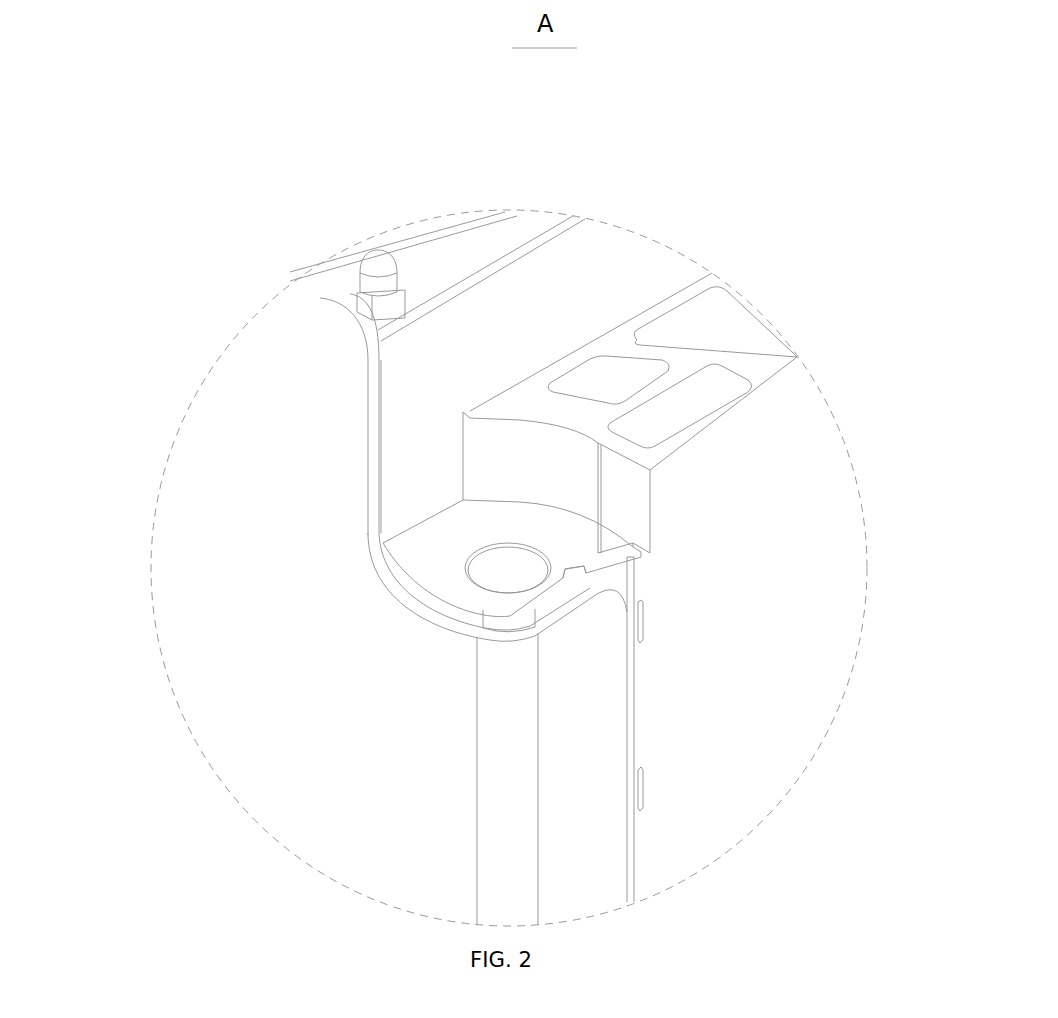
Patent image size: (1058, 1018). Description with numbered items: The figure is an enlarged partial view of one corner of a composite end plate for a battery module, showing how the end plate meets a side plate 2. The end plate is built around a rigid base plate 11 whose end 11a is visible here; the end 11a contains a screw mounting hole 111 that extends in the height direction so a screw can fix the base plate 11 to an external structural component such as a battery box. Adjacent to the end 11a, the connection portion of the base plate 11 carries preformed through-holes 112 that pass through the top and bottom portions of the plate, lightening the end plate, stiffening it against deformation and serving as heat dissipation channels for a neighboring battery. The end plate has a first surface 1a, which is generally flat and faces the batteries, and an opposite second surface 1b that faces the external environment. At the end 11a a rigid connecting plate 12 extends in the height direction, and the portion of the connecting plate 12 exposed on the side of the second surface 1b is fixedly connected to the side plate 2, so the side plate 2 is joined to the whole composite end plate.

The side plate 2 is at (343, 752).
The rigid base plate 11 is at (813, 466).
The screw mounting hole 111 is at (500, 573).
The preformed through-hole 112 is at (598, 378).
The end 11a is at (542, 528).
The first surface 1a is at (346, 367).
The second surface 1b is at (775, 706).
The rigid connecting plate 12 is at (610, 573).